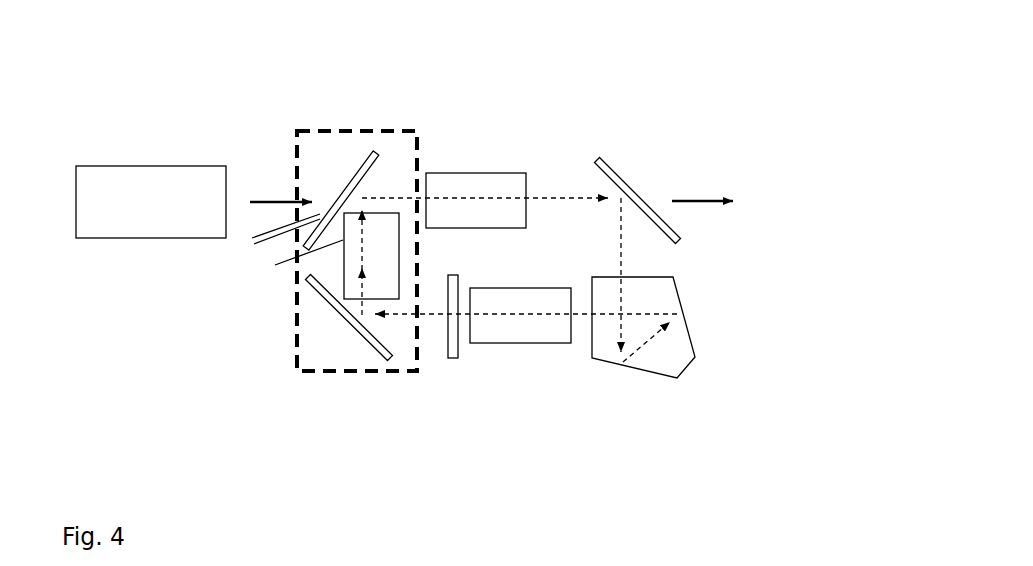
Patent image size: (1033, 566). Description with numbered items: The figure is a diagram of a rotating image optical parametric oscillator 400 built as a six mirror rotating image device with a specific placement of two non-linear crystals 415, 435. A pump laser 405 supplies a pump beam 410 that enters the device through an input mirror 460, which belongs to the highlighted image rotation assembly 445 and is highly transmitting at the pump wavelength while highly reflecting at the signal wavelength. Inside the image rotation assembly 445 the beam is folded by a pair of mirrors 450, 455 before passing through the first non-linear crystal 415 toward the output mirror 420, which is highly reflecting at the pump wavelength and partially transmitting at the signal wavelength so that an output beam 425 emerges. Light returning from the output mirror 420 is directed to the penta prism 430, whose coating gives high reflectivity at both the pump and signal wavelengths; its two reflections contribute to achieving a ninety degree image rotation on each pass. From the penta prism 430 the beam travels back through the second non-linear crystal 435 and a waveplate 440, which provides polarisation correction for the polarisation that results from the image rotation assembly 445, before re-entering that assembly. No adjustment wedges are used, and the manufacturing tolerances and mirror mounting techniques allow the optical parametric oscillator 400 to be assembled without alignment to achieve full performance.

The optical parametric oscillator 400 is at (100, 88).
The pump laser 405 is at (152, 250).
The pump beam 410 is at (273, 180).
The non-linear crystal 415 is at (475, 163).
The output mirror 420 is at (608, 152).
The output beam 425 is at (724, 233).
The penta prism 430 is at (635, 380).
The non-linear crystal 435 is at (524, 358).
The waveplate 440 is at (453, 369).
The image rotation assembly 445 is at (356, 388).
The mirror 450 is at (330, 310).
The mirror 455 is at (342, 262).
The input mirror 460 is at (261, 238).